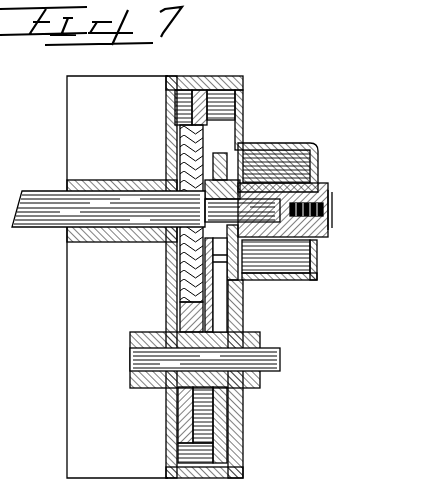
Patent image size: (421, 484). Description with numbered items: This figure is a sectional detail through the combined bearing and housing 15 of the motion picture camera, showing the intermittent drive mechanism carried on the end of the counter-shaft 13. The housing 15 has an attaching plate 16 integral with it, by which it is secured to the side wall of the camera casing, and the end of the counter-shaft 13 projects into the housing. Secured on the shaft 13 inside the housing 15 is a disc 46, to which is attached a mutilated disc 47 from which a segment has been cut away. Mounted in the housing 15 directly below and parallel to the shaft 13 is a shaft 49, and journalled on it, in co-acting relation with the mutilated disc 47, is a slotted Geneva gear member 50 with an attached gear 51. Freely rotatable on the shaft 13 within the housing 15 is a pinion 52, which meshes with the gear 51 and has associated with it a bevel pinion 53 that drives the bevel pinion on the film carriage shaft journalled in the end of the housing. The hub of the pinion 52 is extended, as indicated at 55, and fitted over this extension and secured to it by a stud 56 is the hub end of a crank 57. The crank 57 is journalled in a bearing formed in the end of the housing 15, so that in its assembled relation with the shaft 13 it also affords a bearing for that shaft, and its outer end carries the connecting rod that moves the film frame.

The counter-shaft 13 is at (52, 217).
The combined bearing and housing 15 is at (172, 290).
The attaching plate 16 is at (117, 277).
The disc 46 is at (205, 142).
The mutilated disc 47 is at (183, 152).
The shaft 49 is at (280, 356).
The slotted Geneva gear member 50 is at (178, 403).
The gear 51 is at (213, 325).
The pinion 52 is at (242, 180).
The bevel pinion 53 is at (262, 190).
The extended hub of the pinion 55 is at (318, 184).
The stud 56 is at (327, 220).
The crank 57 is at (300, 163).